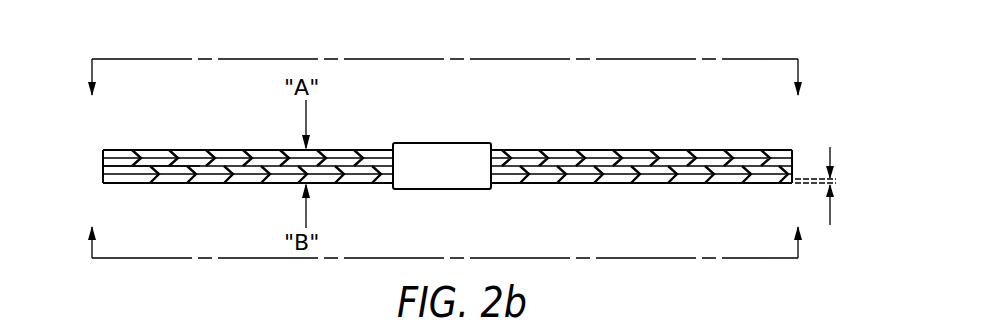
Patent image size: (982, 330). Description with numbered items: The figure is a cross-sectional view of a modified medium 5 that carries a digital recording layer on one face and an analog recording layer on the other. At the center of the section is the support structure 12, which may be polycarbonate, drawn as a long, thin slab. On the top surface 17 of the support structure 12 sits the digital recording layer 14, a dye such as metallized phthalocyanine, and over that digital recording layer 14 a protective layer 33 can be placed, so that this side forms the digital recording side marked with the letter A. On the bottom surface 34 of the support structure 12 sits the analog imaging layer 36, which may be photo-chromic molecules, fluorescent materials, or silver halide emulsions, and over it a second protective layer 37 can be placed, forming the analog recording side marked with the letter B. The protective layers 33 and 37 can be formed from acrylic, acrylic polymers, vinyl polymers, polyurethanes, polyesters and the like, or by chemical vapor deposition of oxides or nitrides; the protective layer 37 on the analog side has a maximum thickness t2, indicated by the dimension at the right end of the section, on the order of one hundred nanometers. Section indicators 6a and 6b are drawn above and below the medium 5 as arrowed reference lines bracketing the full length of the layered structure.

The modified medium 5 is at (710, 150).
The support structure 12 is at (103, 166).
The digital recording layer 14 is at (103, 152).
The top surface 17 is at (551, 150).
The protective layer 33 is at (233, 150).
The bottom surface 34 is at (572, 185).
The analog imaging layer 36 is at (103, 181).
The protective layer 37 is at (207, 184).
The section line 6a- 6a is at (443, 91).
The section line 6b- 6b is at (448, 229).
The maximum thickness t2 is at (819, 194).